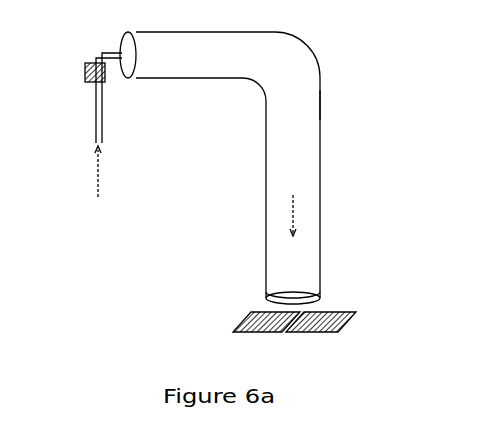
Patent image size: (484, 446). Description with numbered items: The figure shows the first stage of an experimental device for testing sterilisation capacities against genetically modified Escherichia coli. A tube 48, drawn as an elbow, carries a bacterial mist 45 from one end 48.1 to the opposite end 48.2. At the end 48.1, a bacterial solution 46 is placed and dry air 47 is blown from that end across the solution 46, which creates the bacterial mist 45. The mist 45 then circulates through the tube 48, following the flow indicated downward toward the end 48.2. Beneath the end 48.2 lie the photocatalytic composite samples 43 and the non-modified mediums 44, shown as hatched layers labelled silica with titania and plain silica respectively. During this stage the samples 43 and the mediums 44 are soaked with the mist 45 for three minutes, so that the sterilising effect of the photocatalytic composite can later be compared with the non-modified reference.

The photocatalytic composite sample 43 is at (338, 314).
The non-modified medium 44 is at (248, 316).
The bacterial mist 45 is at (267, 53).
The bacterial solution 46 is at (88, 79).
The dry air 47 is at (107, 171).
The tube 48 is at (322, 102).
The end of the tube 48.1 is at (95, 119).
The end of the tube 48.2 is at (288, 300).